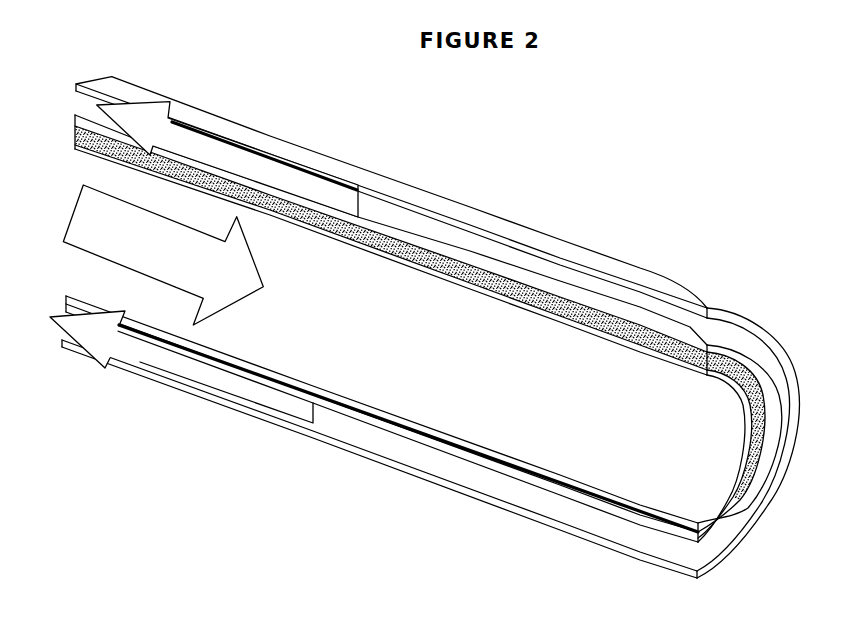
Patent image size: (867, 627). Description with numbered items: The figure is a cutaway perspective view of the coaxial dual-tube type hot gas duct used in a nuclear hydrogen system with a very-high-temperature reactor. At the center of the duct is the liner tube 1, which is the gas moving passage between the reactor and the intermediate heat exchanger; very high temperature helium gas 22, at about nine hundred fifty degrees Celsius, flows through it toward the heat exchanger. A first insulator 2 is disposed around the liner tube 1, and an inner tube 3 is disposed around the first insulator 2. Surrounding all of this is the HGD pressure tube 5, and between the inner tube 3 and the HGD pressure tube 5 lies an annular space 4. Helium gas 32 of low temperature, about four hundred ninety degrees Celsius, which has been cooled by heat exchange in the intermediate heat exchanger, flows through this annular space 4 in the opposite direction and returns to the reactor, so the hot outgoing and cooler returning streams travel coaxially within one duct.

The liner tube 1 is at (768, 392).
The first insulator 2 is at (760, 370).
The inner tube 3 is at (768, 412).
The annular space 4 is at (762, 470).
The HGD pressure tube 5 is at (644, 271).
The helium gas 22 is at (115, 160).
The helium gas 32 is at (268, 168).